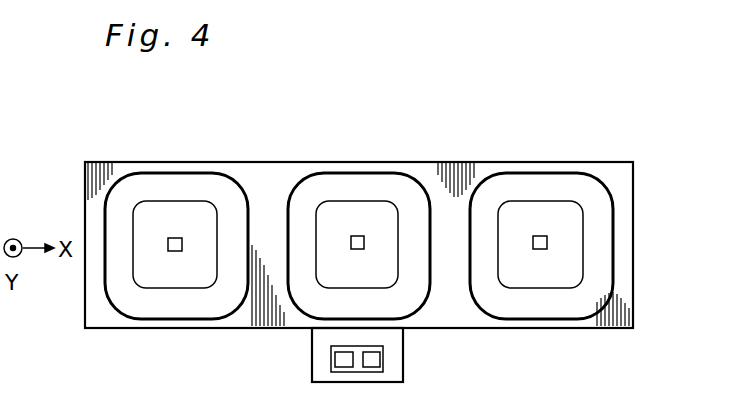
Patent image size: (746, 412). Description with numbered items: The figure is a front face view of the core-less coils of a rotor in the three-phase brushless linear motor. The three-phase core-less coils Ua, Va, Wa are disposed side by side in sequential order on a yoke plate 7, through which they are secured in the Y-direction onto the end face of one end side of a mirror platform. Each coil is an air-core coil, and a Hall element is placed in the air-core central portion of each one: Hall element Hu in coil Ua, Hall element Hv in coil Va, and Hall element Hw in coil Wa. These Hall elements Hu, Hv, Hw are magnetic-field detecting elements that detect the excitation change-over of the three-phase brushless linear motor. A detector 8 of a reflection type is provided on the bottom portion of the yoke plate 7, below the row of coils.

The yoke plate 7 is at (623, 185).
The detector 8 is at (383, 359).
The core-less coil Ua is at (173, 183).
The core-less coil Va is at (362, 183).
The core-less coil Wa is at (540, 183).
The Hall element Hu is at (173, 252).
The Hall element Hv is at (355, 250).
The Hall element Hw is at (537, 250).